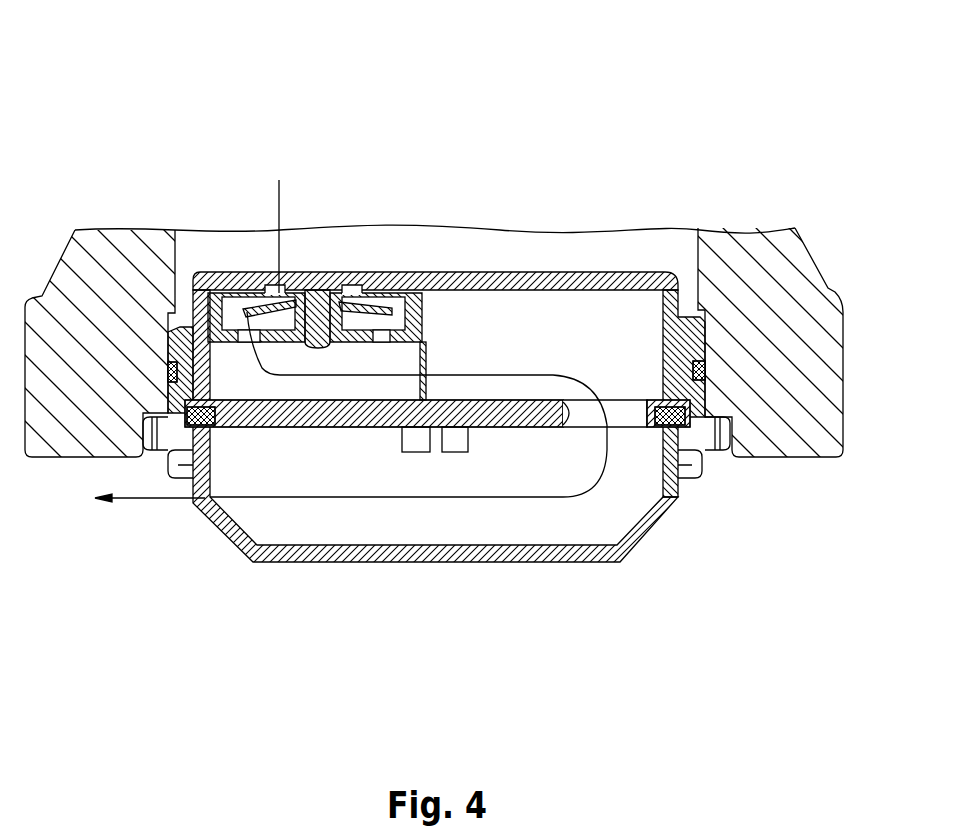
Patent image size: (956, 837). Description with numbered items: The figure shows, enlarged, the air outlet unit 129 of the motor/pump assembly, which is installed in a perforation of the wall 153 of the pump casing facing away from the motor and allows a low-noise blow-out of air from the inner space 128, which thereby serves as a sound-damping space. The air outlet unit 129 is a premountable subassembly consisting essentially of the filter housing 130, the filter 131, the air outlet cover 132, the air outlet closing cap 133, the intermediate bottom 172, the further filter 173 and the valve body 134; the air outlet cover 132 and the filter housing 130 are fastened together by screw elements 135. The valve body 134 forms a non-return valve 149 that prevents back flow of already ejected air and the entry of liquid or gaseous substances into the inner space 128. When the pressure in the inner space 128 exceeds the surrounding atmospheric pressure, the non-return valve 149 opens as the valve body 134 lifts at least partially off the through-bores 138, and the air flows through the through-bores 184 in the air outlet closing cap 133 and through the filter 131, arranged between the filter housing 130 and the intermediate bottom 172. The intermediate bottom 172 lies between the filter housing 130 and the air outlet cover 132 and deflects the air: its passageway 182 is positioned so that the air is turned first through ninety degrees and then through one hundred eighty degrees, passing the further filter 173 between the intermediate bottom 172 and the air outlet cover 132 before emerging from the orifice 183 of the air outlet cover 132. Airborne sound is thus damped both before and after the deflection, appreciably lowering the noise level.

The air outlet unit 129 is at (152, 136).
The inner space 128 is at (260, 208).
The non-return valve 149 is at (333, 264).
The through-bores 138 is at (355, 290).
The filter housing 130 is at (515, 275).
The filter 131 is at (610, 318).
The air outlet cover 132 is at (523, 555).
The air outlet closing cap 133 is at (424, 331).
The valve body 134 is at (424, 308).
The through-bores 184 is at (377, 337).
The intermediate bottom 172 is at (277, 415).
The passageway 182 is at (570, 413).
The screw elements 135 is at (693, 462).
The orifice 183 is at (200, 507).
The wall 153 is at (62, 460).
The further filter 173 is at (395, 522).